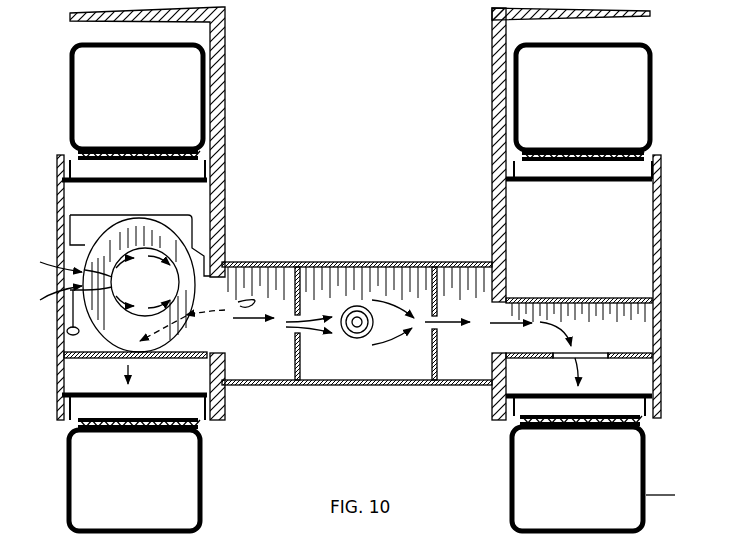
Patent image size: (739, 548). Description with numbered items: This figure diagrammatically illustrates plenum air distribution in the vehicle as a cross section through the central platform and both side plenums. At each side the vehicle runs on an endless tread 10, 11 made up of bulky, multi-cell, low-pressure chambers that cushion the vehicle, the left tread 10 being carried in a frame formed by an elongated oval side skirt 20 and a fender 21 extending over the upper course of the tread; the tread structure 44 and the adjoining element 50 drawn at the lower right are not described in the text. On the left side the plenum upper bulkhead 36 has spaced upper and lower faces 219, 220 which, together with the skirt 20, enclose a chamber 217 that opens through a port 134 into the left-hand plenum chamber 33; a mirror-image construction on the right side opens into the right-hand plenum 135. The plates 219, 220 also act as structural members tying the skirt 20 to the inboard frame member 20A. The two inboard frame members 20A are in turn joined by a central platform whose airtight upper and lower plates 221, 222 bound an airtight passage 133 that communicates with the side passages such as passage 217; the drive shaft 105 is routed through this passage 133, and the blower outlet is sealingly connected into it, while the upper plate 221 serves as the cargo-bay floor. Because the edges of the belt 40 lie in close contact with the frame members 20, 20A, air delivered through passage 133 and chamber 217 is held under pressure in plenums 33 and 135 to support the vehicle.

The endless tread 10 is at (508, 474).
The endless tread 11 is at (206, 465).
The side skirt 20 is at (662, 236).
The inboard frame member 20A is at (492, 48).
The fender 21 is at (650, 15).
The plenum chamber 33 is at (630, 388).
The plenum upper bulkhead 36 is at (602, 298).
The belt 40 is at (548, 396).
The lower tube 44 is at (672, 496).
The flexible joint 50 is at (645, 418).
The drive shaft 105 is at (355, 331).
The airtight passage 133 is at (423, 306).
The port 134 is at (607, 355).
The plenum 135 is at (180, 388).
The chamber 217 is at (643, 332).
The upper face 219 is at (541, 298).
The lower face 220 is at (548, 356).
The upper plate 221 is at (362, 262).
The lower plate 222 is at (390, 385).